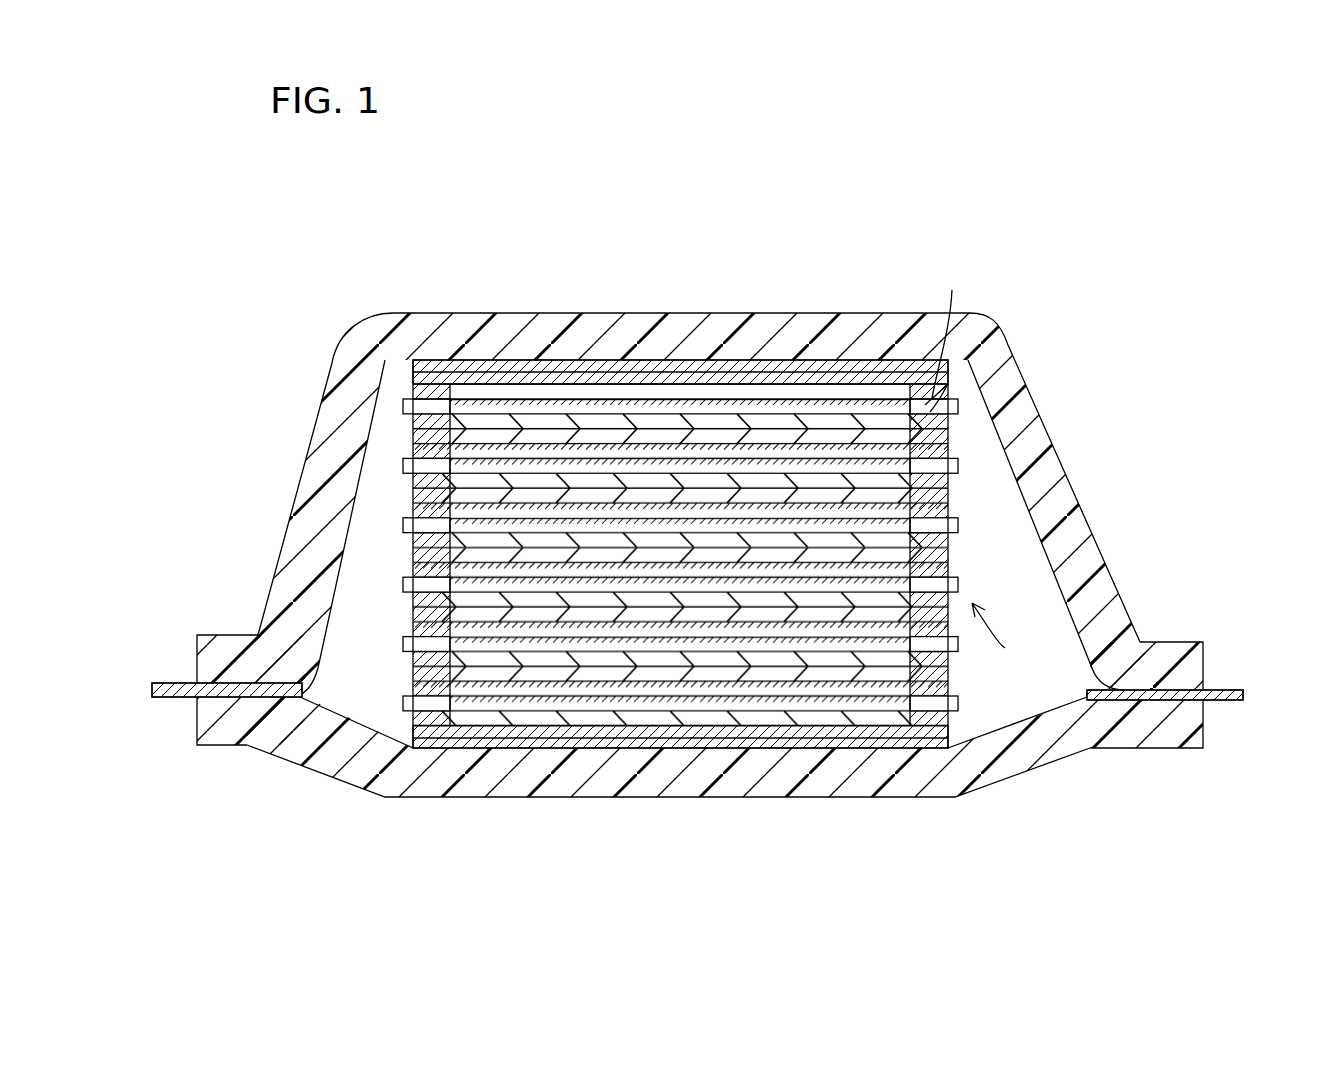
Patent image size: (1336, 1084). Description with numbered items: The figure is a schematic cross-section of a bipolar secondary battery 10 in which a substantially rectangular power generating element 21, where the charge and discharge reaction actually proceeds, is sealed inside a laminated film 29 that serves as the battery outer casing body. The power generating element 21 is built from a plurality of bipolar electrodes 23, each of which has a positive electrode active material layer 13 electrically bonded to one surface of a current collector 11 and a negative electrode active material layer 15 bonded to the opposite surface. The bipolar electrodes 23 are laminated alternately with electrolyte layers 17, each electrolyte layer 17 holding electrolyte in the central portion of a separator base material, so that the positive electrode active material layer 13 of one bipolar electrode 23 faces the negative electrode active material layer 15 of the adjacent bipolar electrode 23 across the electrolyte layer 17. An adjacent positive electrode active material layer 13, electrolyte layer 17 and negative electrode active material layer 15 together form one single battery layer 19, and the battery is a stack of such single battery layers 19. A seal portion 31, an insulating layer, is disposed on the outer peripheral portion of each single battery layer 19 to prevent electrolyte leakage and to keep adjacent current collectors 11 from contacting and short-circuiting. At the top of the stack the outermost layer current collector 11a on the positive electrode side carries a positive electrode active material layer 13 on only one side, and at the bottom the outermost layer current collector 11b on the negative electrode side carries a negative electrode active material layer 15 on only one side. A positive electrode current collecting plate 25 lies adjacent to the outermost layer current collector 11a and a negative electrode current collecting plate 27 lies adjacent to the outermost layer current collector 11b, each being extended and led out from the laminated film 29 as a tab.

The bipolar secondary battery 10 is at (210, 262).
The current collector 11 is at (728, 375).
The outermost layer current collector on the positive electrode side 11a is at (797, 368).
The outermost layer current collector on the negative electrode side 11b is at (818, 738).
The positive electrode active material layer 13 is at (660, 440).
The negative electrode active material layer 15 is at (549, 480).
The electrolyte layer 17 is at (607, 462).
The single battery layer 19 is at (682, 246).
The power generating element 21 is at (1040, 671).
The bipolar electrode 23 is at (705, 869).
The positive electrode current collecting plate 25 is at (182, 683).
The negative electrode current collecting plate 27 is at (1216, 690).
The laminated film 29 is at (1192, 642).
The seal portion 31 is at (940, 395).